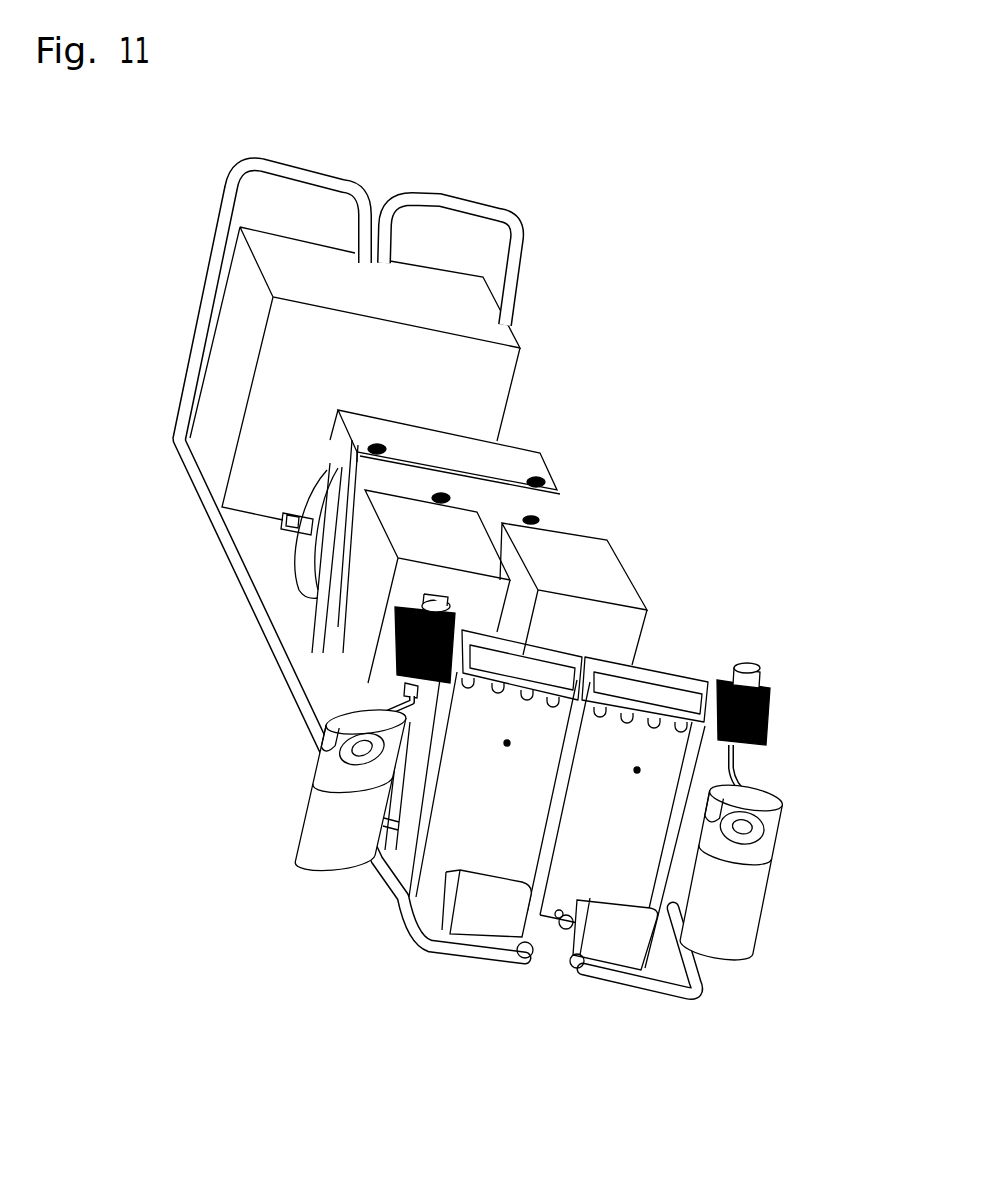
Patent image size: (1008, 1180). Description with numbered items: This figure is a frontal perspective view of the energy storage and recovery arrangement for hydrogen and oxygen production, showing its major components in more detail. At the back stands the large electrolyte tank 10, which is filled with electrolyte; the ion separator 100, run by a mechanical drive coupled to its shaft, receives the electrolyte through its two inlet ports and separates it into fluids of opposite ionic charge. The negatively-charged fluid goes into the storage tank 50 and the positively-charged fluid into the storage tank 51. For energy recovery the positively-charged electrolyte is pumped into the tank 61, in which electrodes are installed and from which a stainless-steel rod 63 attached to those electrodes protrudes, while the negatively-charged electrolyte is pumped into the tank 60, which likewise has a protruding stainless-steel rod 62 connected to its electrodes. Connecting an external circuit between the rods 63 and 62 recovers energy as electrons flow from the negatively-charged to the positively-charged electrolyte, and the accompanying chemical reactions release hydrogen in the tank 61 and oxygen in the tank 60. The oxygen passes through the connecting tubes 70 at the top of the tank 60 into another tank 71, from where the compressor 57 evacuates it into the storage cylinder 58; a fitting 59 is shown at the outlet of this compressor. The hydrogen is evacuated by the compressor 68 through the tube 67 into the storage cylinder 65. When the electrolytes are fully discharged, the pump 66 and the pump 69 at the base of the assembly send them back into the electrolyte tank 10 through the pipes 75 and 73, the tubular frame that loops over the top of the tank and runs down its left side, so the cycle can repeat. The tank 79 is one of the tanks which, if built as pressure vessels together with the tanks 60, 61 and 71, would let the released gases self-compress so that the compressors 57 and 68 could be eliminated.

The tank 10 is at (470, 302).
The ion separator 100 is at (505, 460).
The tank 71 is at (500, 663).
The storage tank 51 is at (583, 550).
The tank 79 is at (613, 683).
The tank 61 is at (595, 765).
The stainless-steel rod 63 is at (643, 760).
The compressor 68 is at (747, 657).
The tube 67 is at (740, 780).
The storage cylinder 65 is at (743, 905).
The pump 66 is at (625, 938).
The pump 69 is at (498, 915).
The tank 60 is at (465, 832).
The stainless-steel rod 62 is at (497, 753).
The storage cylinder 58 is at (332, 823).
The connecting tubes 70 is at (487, 687).
The fitting 59 is at (403, 687).
The compressor 57 is at (390, 648).
The pipe 73 is at (225, 555).
The storage tank 50 is at (413, 525).
The pipe 75 is at (517, 222).